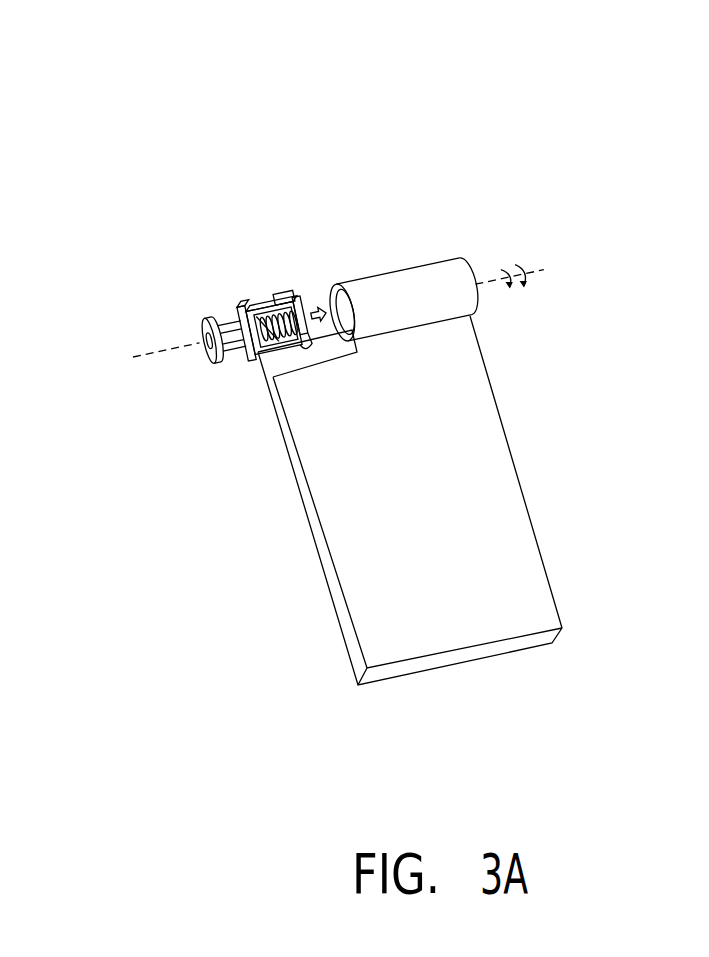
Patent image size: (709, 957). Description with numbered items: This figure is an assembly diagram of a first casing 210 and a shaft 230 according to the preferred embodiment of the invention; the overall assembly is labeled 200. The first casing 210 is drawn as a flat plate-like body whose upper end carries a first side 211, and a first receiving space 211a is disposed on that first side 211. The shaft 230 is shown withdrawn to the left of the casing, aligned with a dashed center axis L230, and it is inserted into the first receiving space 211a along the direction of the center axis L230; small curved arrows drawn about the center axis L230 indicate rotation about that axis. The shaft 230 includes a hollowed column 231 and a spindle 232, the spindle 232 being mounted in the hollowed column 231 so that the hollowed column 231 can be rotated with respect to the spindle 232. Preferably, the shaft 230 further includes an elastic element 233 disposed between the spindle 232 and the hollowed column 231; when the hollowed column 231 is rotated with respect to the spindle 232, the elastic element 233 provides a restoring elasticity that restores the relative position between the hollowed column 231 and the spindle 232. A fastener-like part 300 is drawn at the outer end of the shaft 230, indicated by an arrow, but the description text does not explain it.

The electronic device 200 is at (97, 50).
The first casing 210 is at (488, 485).
The first side 211 is at (387, 283).
The first receiving space 211a is at (336, 302).
The center axis L230 is at (373, 311).
The shaft 230 is at (310, 147).
The hollowed column 231 is at (267, 307).
The spindle 232 is at (222, 319).
The elastic element 233 is at (290, 298).
The fastener 300 is at (190, 314).